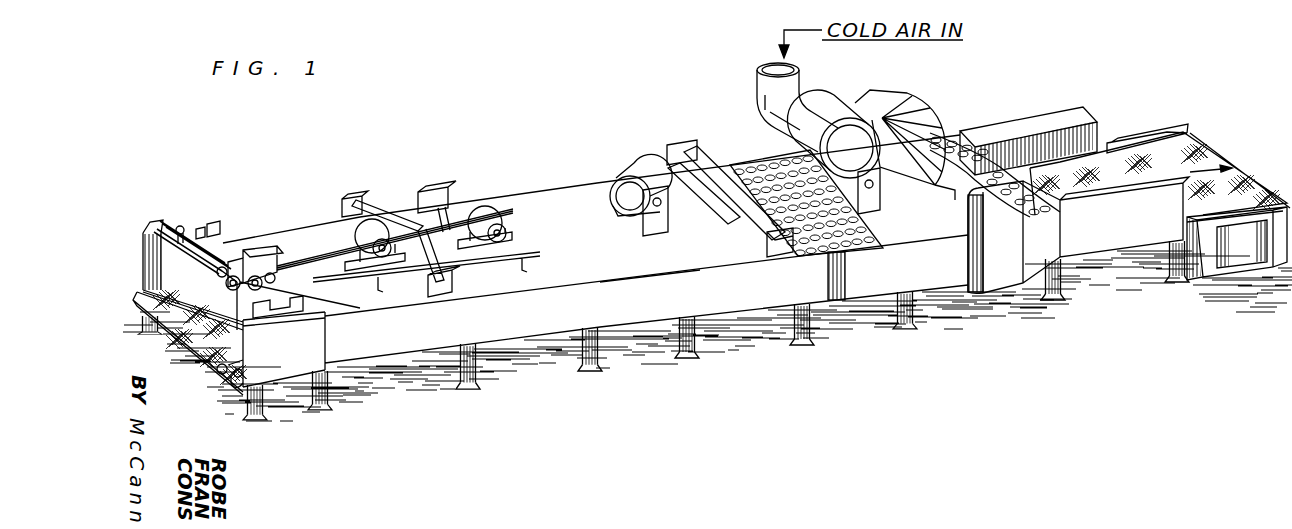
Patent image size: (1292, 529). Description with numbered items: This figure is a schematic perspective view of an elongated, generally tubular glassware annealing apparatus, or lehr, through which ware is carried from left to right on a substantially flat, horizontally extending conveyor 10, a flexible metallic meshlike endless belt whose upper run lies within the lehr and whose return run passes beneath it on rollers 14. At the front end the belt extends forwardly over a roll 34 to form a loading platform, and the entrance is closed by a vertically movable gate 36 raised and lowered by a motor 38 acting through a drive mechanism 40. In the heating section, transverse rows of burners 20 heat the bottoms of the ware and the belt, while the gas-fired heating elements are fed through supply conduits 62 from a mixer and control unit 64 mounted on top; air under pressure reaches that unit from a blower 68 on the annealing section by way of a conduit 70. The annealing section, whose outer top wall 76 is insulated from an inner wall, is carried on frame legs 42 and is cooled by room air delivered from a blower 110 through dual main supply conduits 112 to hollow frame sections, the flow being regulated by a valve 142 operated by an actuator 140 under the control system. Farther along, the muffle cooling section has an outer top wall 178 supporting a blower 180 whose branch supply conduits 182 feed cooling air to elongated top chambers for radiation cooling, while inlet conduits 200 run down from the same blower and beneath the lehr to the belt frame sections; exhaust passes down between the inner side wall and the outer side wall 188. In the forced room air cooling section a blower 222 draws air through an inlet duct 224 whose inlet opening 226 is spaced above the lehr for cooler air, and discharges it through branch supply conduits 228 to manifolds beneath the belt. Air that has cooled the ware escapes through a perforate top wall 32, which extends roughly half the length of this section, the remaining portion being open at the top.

The conveyor belt 10 is at (210, 340).
The rollers 14 is at (243, 393).
The burners 20 is at (240, 381).
The perforate top wall 32 is at (763, 172).
The roll 34 is at (218, 371).
The gate 36 is at (170, 257).
The motor 38 is at (236, 262).
The drive mechanism 40 is at (180, 226).
The legs 42 is at (150, 328).
The supply conduits 62 is at (210, 222).
The mixer and control unit 64 is at (245, 253).
The blower 68 is at (378, 222).
The conduit 70 is at (300, 258).
The outer top wall 76 is at (535, 200).
The blower 110 is at (478, 207).
The main supply conduits 112 is at (420, 228).
The actuator 140 is at (436, 188).
The valve 142 is at (455, 255).
The outer top wall 178 is at (650, 259).
The blower 180 is at (637, 176).
The branch supply conduits 182 is at (700, 150).
The outer side wall 188 is at (697, 300).
The inlet conduits 200 is at (664, 146).
The blower 222 is at (827, 137).
The inlet duct 224 is at (760, 118).
The inlet opening 226 is at (762, 64).
The branch supply conduits 228 is at (900, 92).